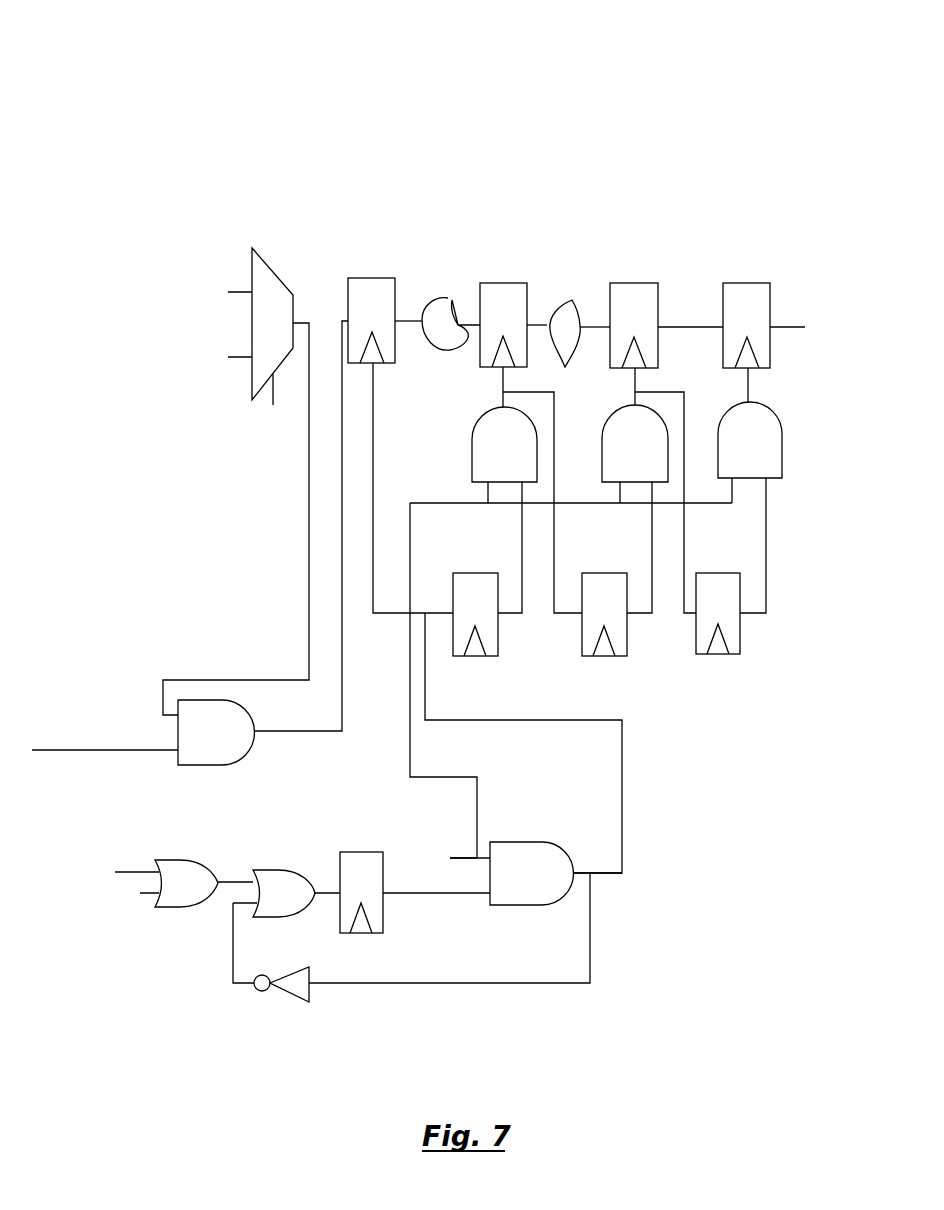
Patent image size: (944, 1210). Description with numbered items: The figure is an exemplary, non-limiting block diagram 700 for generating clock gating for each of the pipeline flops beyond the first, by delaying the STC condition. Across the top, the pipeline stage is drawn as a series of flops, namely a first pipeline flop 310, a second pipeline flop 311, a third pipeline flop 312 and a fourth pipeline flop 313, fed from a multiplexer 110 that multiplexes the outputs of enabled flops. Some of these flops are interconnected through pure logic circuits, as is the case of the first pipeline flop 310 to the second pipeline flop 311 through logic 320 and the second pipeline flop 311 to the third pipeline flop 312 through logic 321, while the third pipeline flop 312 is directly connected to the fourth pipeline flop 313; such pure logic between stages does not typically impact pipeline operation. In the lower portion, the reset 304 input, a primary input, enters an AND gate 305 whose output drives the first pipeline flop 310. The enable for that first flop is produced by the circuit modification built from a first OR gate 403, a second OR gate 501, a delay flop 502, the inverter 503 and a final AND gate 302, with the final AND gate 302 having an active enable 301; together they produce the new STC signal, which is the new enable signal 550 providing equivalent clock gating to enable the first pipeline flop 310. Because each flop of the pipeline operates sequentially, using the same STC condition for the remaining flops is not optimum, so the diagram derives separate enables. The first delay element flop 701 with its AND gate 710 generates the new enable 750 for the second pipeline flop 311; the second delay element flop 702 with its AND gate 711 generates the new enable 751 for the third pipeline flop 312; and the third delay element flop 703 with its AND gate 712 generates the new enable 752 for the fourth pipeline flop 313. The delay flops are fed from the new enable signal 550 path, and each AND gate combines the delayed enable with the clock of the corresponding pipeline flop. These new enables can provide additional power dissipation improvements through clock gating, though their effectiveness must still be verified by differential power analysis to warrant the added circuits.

The block diagram 700 is at (187, 118).
The multiplexer 110 is at (275, 272).
The flop FF4-1 310 is at (380, 278).
The flop FF4-2 311 is at (500, 283).
The flop FF4-3 312 is at (618, 283).
The flop FF4-4 313 is at (738, 283).
The logic 320 is at (451, 298).
The logic 321 is at (564, 300).
The new enable 750 is at (490, 392).
The new enable 751 is at (637, 390).
The new enable 752 is at (749, 390).
The AND gate AND6 710 is at (472, 432).
The AND gate AND7 711 is at (602, 442).
The AND gate AND8 712 is at (782, 437).
The delay element flop FF8 701 is at (498, 628).
The delay element flop FF9 702 is at (627, 628).
The delay element flop FF10 703 is at (740, 628).
The reset 304 is at (130, 732).
The AND gate 4 305 is at (200, 765).
The OR gate 3 403 is at (170, 855).
The OR gate OR4 501 is at (262, 870).
The flop FF7 502 is at (383, 910).
The inverter I 503 is at (293, 998).
The enable EN4 301 is at (428, 838).
The AND gate AND5 302 is at (552, 843).
The New_enable_FF4-1 signal 550 is at (622, 803).